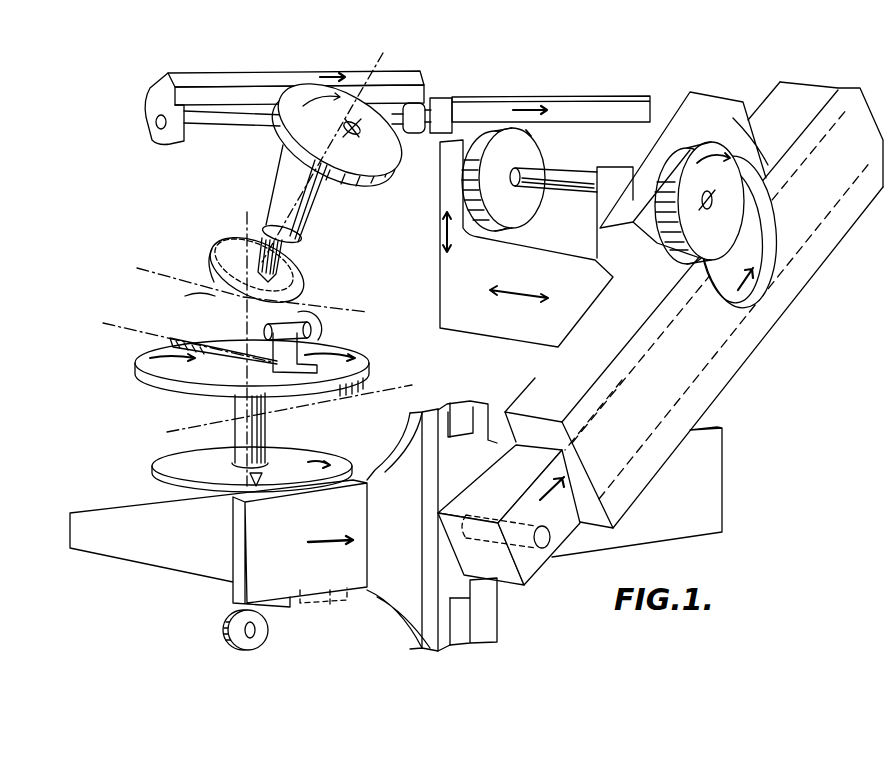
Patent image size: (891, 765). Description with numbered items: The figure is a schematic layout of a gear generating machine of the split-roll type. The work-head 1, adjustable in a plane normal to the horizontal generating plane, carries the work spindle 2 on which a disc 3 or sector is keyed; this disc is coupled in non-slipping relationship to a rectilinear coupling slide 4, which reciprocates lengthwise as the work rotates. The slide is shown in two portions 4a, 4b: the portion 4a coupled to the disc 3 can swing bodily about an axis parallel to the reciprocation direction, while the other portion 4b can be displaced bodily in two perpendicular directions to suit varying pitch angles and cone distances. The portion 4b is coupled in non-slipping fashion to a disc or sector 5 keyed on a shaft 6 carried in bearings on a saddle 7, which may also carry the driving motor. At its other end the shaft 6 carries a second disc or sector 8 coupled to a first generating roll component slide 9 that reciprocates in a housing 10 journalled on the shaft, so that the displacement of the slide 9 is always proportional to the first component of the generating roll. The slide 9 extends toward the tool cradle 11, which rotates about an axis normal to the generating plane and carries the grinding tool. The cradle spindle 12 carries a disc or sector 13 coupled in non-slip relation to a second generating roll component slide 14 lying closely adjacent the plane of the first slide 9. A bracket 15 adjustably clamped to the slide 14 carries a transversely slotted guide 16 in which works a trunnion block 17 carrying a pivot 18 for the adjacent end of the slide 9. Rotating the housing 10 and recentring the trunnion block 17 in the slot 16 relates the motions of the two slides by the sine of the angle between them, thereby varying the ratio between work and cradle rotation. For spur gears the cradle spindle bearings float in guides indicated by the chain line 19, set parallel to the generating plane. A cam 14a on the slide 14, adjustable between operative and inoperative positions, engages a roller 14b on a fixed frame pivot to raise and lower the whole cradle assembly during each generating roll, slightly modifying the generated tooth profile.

The work-head 1 is at (317, 200).
The work spindle 2 is at (356, 131).
The disc 3 is at (375, 181).
The rectilinear coupling slide 4 is at (438, 100).
The slide portion 4a is at (226, 80).
The slide portion 4b is at (603, 104).
The disc or sector 5 is at (532, 215).
The shaft 6 is at (572, 183).
The saddle 7 is at (514, 333).
The second disc or sector 8 is at (687, 148).
The first generating roll component slide 9 is at (532, 575).
The housing 10 is at (851, 214).
The tool cradle 11 is at (324, 383).
The cradle spindle 12 is at (268, 430).
The disc or sector 13 is at (173, 458).
The second generating roll component slide 14 is at (134, 558).
The cam 14a is at (321, 614).
The roller 14b is at (232, 614).
The bracket 15 is at (400, 442).
The transversely slotted guide 16 is at (468, 413).
The trunnion block 17 is at (475, 587).
The pivot 18 is at (548, 551).
The guides 19 is at (196, 426).